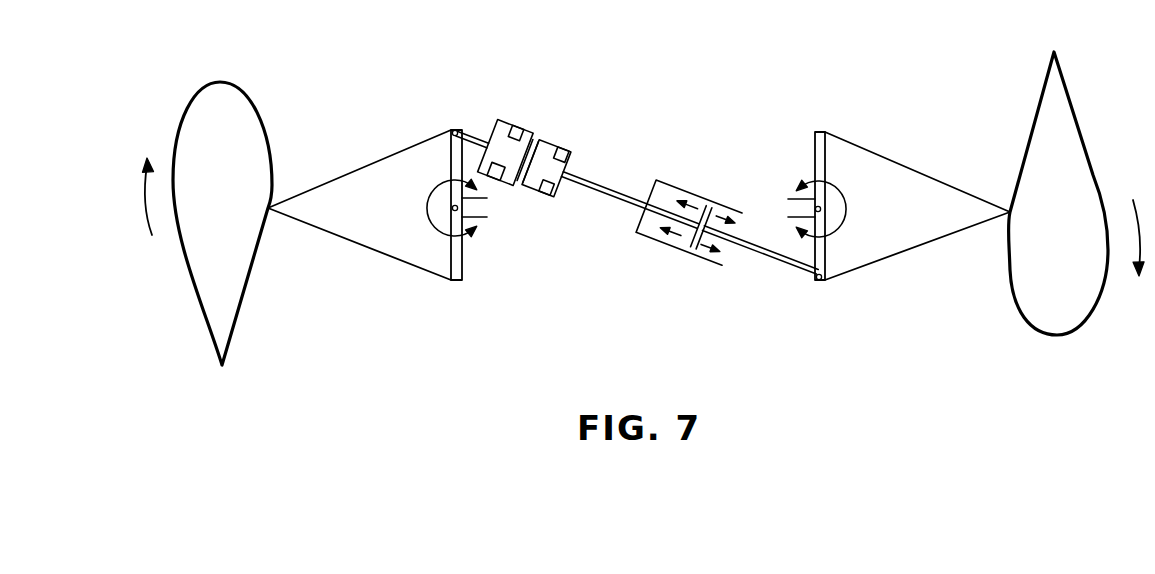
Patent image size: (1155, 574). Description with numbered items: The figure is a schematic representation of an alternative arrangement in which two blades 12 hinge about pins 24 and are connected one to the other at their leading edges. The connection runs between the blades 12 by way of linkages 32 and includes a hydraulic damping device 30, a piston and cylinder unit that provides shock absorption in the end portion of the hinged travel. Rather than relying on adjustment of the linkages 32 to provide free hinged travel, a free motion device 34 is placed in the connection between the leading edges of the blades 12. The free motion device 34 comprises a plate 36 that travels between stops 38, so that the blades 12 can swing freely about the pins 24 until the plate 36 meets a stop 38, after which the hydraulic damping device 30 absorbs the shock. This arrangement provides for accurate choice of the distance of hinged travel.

The blade 12 is at (462, 268).
The pin 24 is at (451, 208).
The hydraulic damping device 30 is at (682, 240).
The linkage 32 is at (455, 128).
The free motion device 34 is at (543, 148).
The plate 36 is at (531, 180).
The stop 38 is at (516, 132).